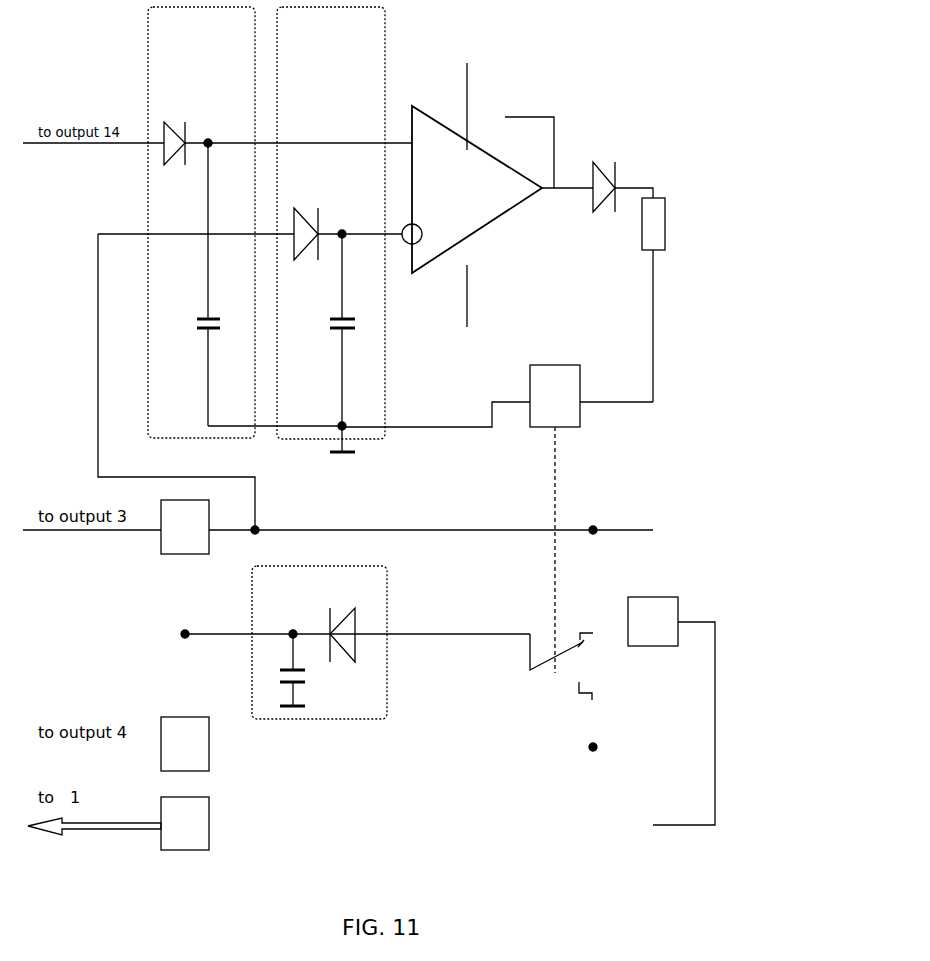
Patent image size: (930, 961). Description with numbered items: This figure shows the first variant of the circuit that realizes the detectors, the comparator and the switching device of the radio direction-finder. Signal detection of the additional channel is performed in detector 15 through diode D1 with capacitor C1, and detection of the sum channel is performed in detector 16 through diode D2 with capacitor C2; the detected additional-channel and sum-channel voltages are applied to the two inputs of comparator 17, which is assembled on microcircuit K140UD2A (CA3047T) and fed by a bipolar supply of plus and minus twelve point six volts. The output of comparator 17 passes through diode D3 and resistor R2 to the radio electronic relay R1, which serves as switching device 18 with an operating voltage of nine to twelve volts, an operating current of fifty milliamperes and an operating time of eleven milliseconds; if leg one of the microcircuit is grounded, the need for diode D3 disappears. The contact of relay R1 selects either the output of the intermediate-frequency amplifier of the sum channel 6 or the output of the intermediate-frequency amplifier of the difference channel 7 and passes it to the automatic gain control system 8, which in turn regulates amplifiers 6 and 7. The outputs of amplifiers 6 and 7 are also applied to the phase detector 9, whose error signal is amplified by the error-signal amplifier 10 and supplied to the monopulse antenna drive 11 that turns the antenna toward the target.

The detector of the additional channel 15 is at (280, 222).
The detector of the sum channel 16 is at (250, 229).
The compare facility (comparator) 17 is at (526, 186).
The switching device (switch) 18 is at (497, 519).
The intermediate-frequency amplifier of the sum channel 6 is at (407, 527).
The intermediate-frequency amplifier of the difference channel 7 is at (379, 744).
The automatic gain control system of the sum channel 8 is at (355, 642).
The phase detector 9 is at (671, 711).
The error-signal amplifier 10 is at (628, 822).
The monopulse antenna drive (mechanism) 11 is at (118, 823).
The diode D1 is at (178, 126).
The diode D2 is at (303, 215).
The diode D3 is at (607, 170).
The capacitor C1 is at (223, 284).
The capacitor C2 is at (355, 343).
The radio electronic relay R1 is at (609, 372).
The resistor R2 is at (661, 295).